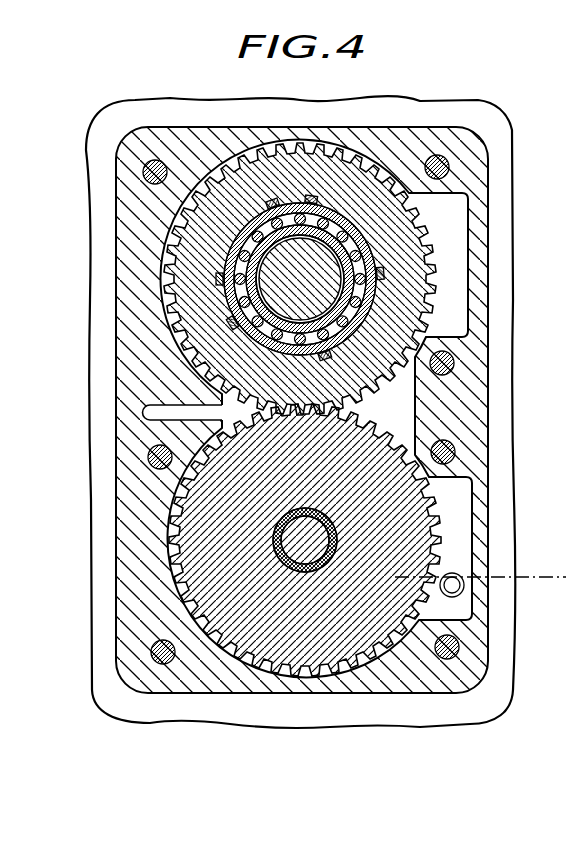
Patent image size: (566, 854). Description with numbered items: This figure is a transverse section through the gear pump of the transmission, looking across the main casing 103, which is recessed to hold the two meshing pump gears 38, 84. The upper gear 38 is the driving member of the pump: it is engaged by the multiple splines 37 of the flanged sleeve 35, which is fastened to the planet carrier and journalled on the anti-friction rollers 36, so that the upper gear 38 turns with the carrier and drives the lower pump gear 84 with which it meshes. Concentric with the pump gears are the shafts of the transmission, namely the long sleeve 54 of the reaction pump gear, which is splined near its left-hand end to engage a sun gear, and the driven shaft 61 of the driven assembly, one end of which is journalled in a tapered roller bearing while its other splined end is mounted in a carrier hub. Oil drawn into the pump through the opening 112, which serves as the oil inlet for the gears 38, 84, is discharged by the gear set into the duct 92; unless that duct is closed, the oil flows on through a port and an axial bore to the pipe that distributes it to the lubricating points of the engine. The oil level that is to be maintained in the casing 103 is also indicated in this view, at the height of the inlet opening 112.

The main casing 103 is at (449, 106).
The pump gear 84 is at (455, 497).
The duct 92 is at (150, 411).
The gear 38 is at (357, 279).
The anti-friction rollers 36 is at (208, 278).
The driven shaft 61 is at (207, 272).
The flanged sleeve 35 is at (398, 279).
The multiple splines 37 is at (404, 282).
The long sleeve 54 is at (188, 286).
The opening 112 is at (480, 597).